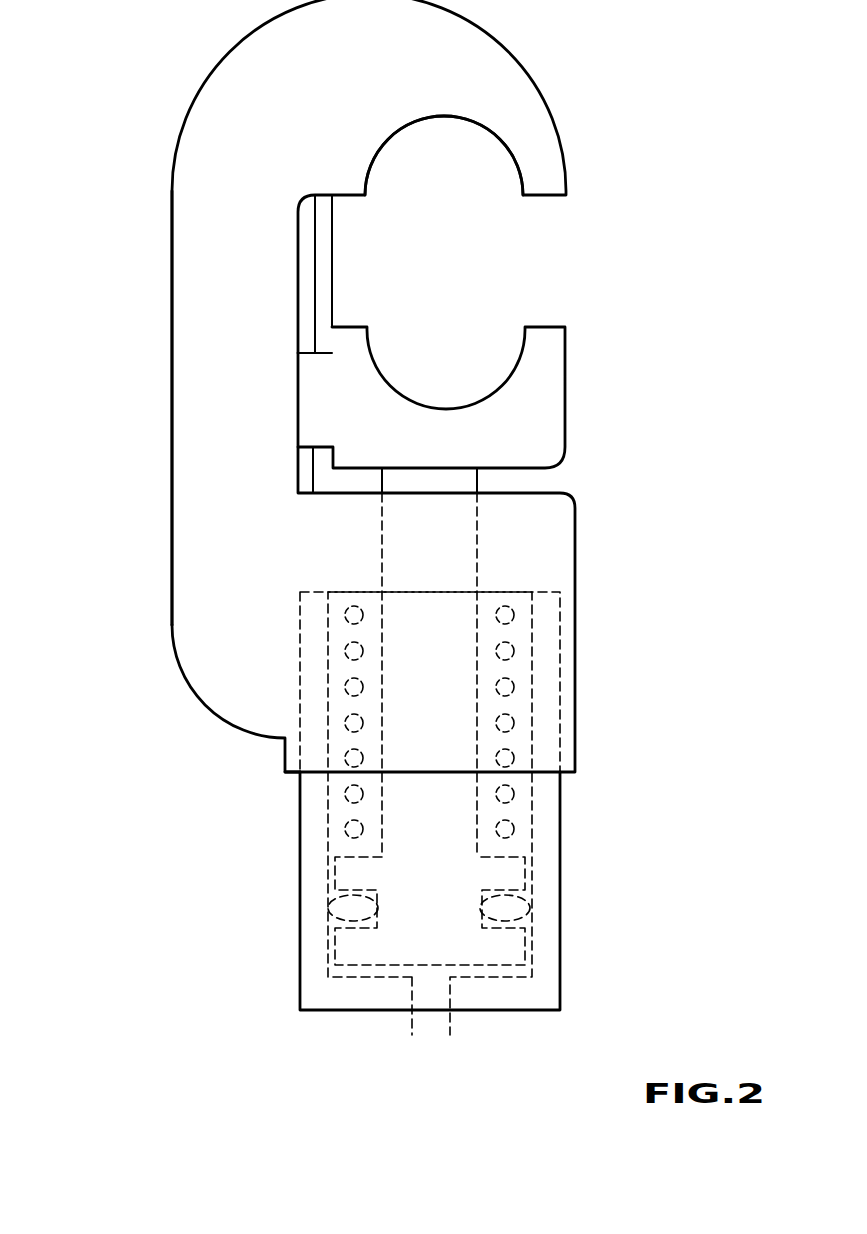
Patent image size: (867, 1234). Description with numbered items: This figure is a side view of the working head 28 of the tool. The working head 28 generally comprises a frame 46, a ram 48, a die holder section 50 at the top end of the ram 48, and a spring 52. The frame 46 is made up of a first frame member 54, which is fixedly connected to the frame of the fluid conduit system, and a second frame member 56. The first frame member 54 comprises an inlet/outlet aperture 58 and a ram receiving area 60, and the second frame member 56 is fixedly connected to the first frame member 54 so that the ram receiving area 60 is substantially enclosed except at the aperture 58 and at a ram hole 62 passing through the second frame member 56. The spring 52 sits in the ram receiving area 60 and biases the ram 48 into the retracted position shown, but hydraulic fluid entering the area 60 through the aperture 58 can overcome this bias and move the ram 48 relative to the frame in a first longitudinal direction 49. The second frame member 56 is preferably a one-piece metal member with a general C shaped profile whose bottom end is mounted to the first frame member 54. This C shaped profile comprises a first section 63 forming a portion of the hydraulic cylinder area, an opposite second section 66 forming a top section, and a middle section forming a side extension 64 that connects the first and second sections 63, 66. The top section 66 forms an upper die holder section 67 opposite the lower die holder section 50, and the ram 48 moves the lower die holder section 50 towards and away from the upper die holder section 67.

The working head 28 is at (90, 127).
The frame 46 is at (172, 203).
The side extension 64 is at (172, 230).
The second section 66 is at (500, 60).
The upper die holder section 67 is at (537, 165).
The first longitudinal direction 49 is at (487, 305).
The die holder section 50 is at (567, 357).
The ram hole 62 is at (477, 522).
The first section 63 is at (575, 655).
The spring 52 is at (507, 615).
The ram receiving area 60 is at (515, 742).
The ram 48 is at (440, 827).
The first frame member 54 is at (300, 913).
The second frame member 56 is at (172, 633).
The inlet/outlet aperture 58 is at (430, 1032).